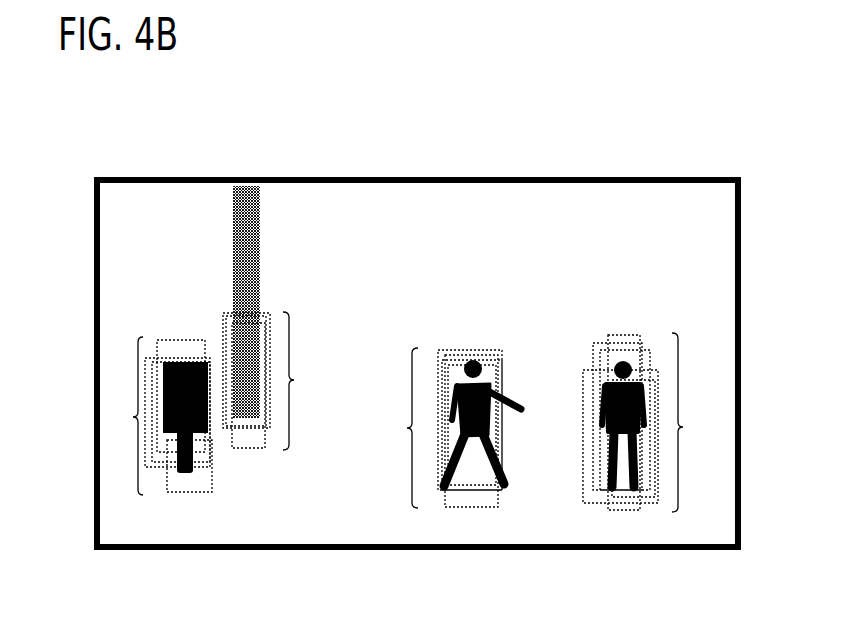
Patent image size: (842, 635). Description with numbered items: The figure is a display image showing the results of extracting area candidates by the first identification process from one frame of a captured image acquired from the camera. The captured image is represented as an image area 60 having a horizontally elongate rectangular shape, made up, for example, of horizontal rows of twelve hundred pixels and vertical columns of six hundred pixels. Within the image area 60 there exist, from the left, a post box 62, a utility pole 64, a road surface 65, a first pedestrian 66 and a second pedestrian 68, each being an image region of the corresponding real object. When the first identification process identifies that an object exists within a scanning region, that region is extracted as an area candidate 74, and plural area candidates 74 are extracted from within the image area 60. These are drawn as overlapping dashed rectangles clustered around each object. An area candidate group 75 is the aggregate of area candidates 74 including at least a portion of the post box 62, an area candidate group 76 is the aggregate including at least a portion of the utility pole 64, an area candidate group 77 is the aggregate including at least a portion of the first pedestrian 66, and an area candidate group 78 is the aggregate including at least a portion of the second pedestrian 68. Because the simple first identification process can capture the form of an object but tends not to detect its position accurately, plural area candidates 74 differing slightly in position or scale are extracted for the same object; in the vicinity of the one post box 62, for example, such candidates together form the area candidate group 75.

The image area 60 is at (613, 178).
The post box 62 is at (173, 340).
The utility pole 64 is at (258, 224).
The road surface 65 is at (534, 490).
The first pedestrian 66 is at (471, 360).
The second pedestrian 68 is at (622, 361).
The area candidate 74 is at (379, 412).
The area candidate group 75 is at (133, 417).
The area candidate group 76 is at (278, 381).
The area candidate group 77 is at (434, 428).
The area candidate group 78 is at (652, 422).